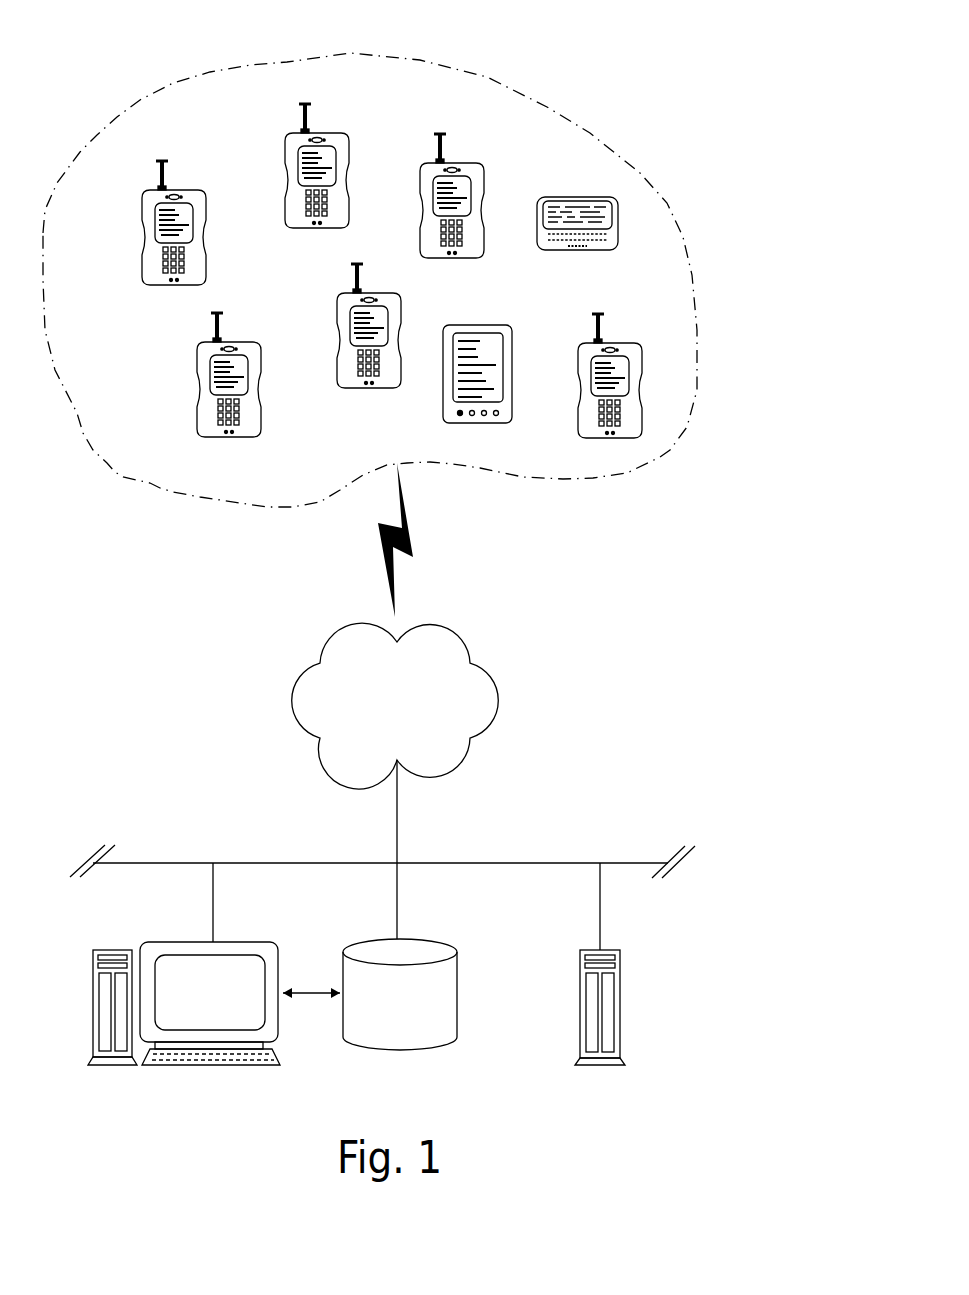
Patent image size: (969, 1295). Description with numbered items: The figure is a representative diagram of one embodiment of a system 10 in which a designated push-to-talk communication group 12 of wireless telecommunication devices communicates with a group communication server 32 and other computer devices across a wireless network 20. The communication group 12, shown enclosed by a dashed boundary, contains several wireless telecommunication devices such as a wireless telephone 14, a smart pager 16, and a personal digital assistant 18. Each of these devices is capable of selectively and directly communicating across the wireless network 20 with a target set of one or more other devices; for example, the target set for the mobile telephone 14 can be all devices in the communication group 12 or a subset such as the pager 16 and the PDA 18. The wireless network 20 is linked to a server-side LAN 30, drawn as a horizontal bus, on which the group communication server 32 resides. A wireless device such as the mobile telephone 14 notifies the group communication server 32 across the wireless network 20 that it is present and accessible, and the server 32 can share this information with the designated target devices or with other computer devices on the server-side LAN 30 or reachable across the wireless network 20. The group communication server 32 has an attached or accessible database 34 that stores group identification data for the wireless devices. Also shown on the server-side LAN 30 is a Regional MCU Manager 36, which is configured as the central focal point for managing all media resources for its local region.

The system 10 is at (638, 72).
The communication group 12 is at (113, 485).
The wireless telephone 14 is at (340, 133).
The smart pager 16 is at (583, 251).
The personal digital assistant 18 is at (443, 393).
The wireless network 20 is at (500, 700).
The server-side LAN 30 is at (178, 862).
The group communication server 32 is at (185, 940).
The database 34 is at (457, 993).
The Regional MCU Manager 36 is at (620, 1003).